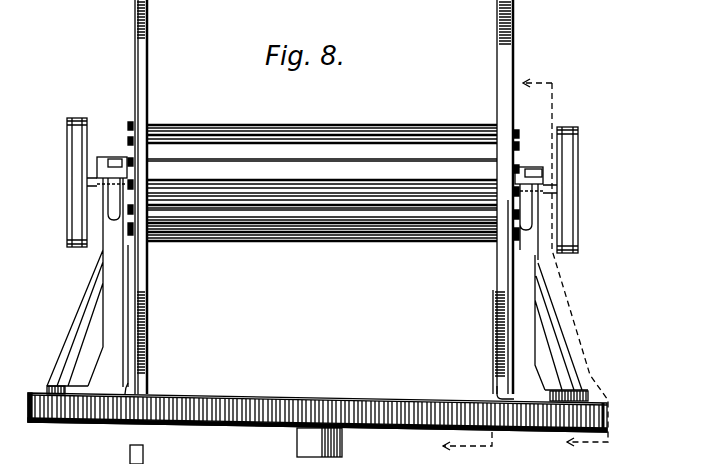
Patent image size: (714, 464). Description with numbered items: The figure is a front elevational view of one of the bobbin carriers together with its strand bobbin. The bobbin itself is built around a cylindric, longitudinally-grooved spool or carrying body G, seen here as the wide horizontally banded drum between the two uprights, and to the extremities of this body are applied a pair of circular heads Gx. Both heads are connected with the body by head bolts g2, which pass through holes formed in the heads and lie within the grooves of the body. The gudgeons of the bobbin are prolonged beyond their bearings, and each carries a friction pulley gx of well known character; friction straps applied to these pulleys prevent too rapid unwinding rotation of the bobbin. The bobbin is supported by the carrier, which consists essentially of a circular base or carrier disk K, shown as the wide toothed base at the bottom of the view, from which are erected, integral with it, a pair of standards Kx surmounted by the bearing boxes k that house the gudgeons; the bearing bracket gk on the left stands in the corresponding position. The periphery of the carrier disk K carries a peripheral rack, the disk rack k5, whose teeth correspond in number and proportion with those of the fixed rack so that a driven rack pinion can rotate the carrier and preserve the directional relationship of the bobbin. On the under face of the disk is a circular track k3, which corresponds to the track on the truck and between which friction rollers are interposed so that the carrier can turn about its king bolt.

The spool or carrying body G is at (340, 243).
The circular heads Gx is at (147, 73).
The head bolts g2 is at (522, 135).
The friction pulley gx is at (588, 160).
The left bearing bracket gk is at (96, 175).
The bearing boxes k is at (524, 170).
The standards Kx is at (590, 302).
The carrier disk K is at (270, 397).
The disk rack k5 is at (609, 413).
The circular track k3 is at (112, 431).